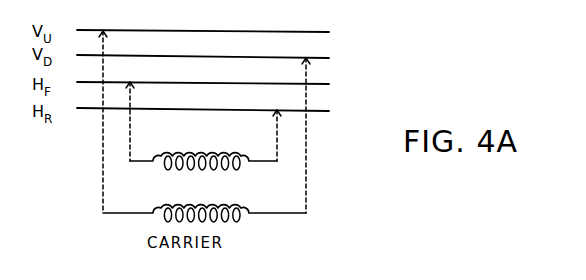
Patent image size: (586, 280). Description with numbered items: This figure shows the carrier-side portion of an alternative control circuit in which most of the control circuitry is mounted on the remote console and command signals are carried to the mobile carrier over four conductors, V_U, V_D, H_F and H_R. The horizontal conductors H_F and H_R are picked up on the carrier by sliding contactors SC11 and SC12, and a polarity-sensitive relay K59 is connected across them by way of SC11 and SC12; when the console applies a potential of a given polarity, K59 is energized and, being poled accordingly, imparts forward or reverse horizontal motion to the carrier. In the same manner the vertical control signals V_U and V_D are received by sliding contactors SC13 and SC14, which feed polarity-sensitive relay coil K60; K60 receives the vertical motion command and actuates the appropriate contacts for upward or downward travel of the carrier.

The sliding contactor SC13 is at (106, 34).
The sliding contactor SC14 is at (309, 61).
The sliding contactor SC11 is at (133, 85).
The sliding contactor SC12 is at (275, 114).
The polarity-sensitive relay K59 is at (197, 152).
The polarity-sensitive relay coil K60 is at (198, 206).